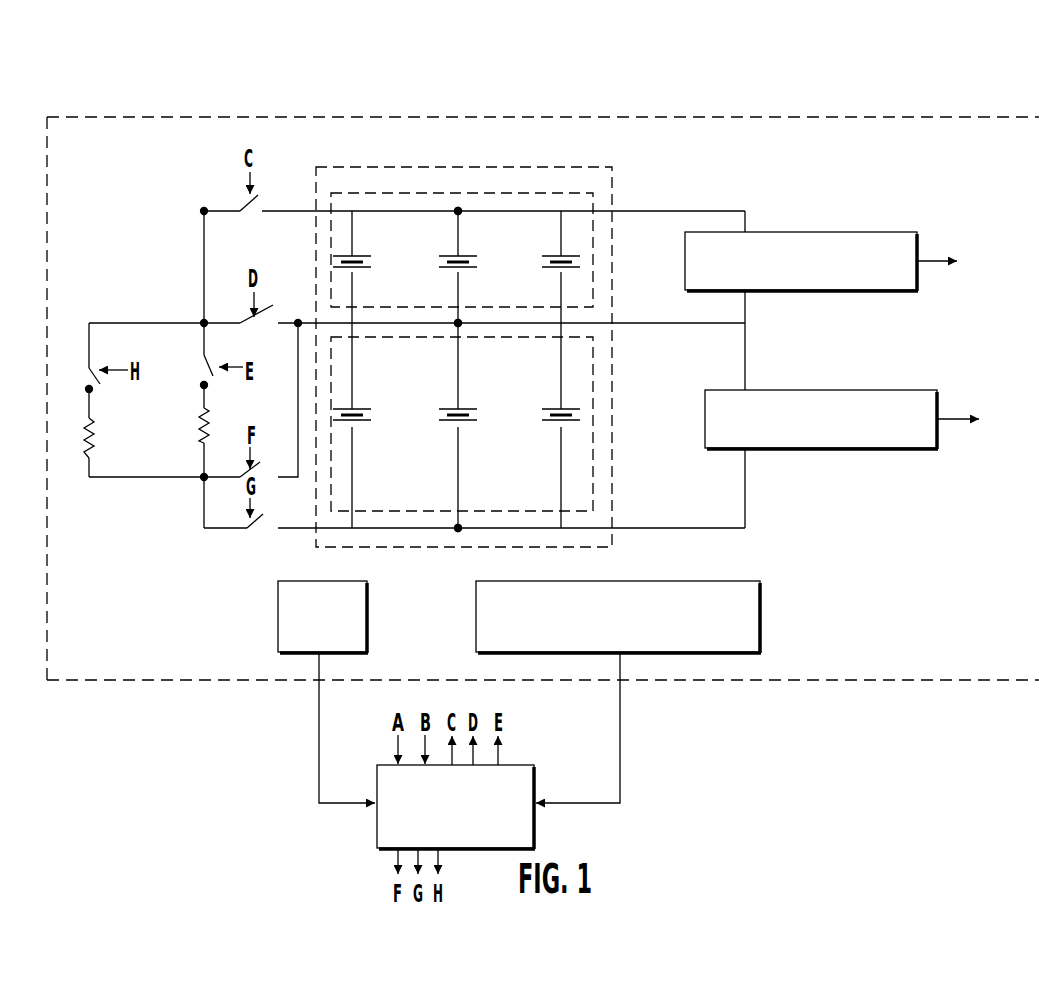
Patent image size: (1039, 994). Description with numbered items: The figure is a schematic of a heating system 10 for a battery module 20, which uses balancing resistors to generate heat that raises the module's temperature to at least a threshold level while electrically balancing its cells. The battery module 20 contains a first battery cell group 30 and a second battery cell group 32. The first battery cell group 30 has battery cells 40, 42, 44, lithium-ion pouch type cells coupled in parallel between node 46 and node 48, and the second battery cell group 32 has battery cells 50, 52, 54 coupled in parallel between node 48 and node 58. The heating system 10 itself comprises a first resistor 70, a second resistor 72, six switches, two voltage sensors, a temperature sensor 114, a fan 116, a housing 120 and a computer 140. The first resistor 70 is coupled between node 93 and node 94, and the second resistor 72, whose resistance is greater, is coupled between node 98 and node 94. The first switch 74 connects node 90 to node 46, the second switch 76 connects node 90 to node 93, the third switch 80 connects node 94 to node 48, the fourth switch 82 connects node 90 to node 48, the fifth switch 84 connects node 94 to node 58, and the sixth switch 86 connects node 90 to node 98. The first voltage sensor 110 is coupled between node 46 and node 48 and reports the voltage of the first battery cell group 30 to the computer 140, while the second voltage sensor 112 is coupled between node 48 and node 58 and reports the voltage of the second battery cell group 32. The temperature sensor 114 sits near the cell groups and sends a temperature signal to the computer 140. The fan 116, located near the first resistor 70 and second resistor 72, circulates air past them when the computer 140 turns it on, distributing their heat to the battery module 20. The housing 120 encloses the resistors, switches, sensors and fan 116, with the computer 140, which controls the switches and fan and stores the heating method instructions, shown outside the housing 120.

The heating system 10 is at (898, 106).
The housing 120 is at (512, 117).
The battery module 20 is at (537, 167).
The first battery cell group 30 is at (452, 193).
The second battery cell group 32 is at (470, 337).
The battery cell 40 is at (365, 253).
The battery cell 42 is at (463, 253).
The battery cell 44 is at (565, 253).
The node 46 is at (458, 211).
The node 48 is at (458, 323).
The battery cell 50 is at (365, 407).
The battery cell 52 is at (468, 407).
The battery cell 54 is at (567, 405).
The node 58 is at (458, 528).
The first resistor 70 is at (200, 426).
The second resistor 72 is at (86, 435).
The first switch 74 is at (258, 195).
The second switch 76 is at (221, 364).
The third switch 80 is at (258, 462).
The fourth switch 82 is at (268, 311).
The fifth switch 84 is at (258, 518).
The sixth switch 86 is at (89, 369).
The node 90 is at (204, 323).
The node 93 is at (204, 385).
The node 94 is at (204, 477).
The node 98 is at (89, 389).
The first voltage sensor 110 is at (840, 232).
The second voltage sensor 112 is at (837, 390).
The temperature sensor 114 is at (760, 581).
The fan 116 is at (367, 600).
The computer 140 is at (525, 765).